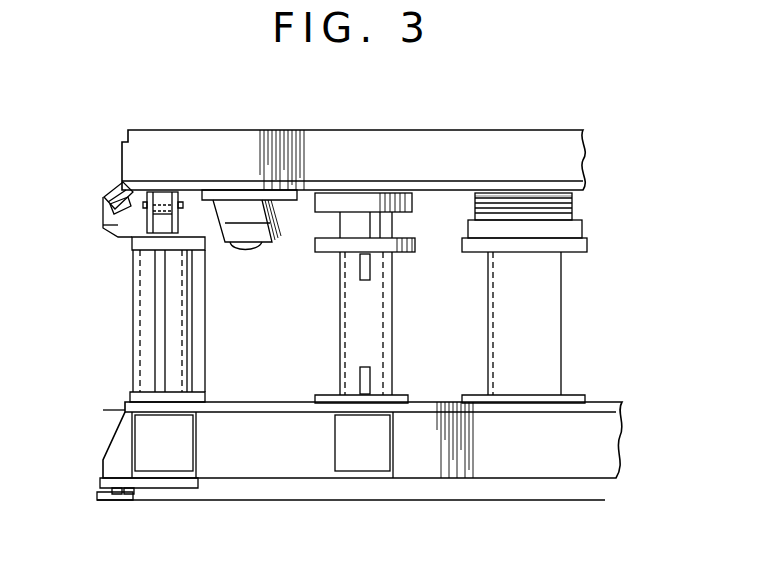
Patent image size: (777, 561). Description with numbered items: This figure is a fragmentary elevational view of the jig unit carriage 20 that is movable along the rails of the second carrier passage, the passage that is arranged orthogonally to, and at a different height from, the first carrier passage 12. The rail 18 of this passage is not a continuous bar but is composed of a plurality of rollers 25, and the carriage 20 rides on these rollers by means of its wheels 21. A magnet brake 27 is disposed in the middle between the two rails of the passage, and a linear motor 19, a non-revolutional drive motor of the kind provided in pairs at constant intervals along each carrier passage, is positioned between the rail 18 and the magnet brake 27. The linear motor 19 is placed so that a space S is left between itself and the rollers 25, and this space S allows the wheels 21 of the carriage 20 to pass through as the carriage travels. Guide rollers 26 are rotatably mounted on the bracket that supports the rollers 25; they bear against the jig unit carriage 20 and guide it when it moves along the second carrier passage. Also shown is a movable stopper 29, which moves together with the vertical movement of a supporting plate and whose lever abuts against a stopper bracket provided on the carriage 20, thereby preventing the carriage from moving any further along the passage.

The first carrier passage 12 is at (601, 407).
The rail 18 is at (188, 217).
The linear motor 19 is at (412, 202).
The jig unit carriage 20 is at (310, 128).
The wheel 21 is at (257, 240).
The rollers 25 is at (162, 196).
The guide rollers 26 is at (117, 181).
The magnet brake 27 is at (497, 195).
The movable stopper 29 is at (561, 290).
The space S is at (247, 316).